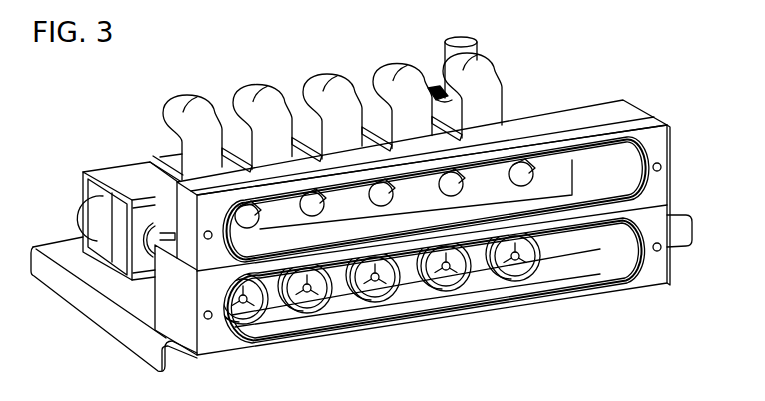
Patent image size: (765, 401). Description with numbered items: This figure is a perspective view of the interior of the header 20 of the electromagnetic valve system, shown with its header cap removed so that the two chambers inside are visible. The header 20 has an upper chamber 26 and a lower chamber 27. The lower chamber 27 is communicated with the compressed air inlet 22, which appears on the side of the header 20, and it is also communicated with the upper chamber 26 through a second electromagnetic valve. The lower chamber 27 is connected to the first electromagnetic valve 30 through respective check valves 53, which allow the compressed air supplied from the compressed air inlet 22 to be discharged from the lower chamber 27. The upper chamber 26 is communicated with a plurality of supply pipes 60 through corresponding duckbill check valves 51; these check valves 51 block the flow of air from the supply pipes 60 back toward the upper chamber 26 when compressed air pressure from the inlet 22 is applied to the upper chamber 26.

The header 20 is at (623, 102).
The compressed air inlet 22 is at (682, 228).
The upper chamber 26 is at (610, 175).
The lower chamber 27 is at (592, 272).
The first electromagnetic valve 30 is at (128, 173).
The duckbill check valve 51 is at (522, 168).
The check valve 53 is at (515, 256).
The supply pipe 60 is at (463, 68).